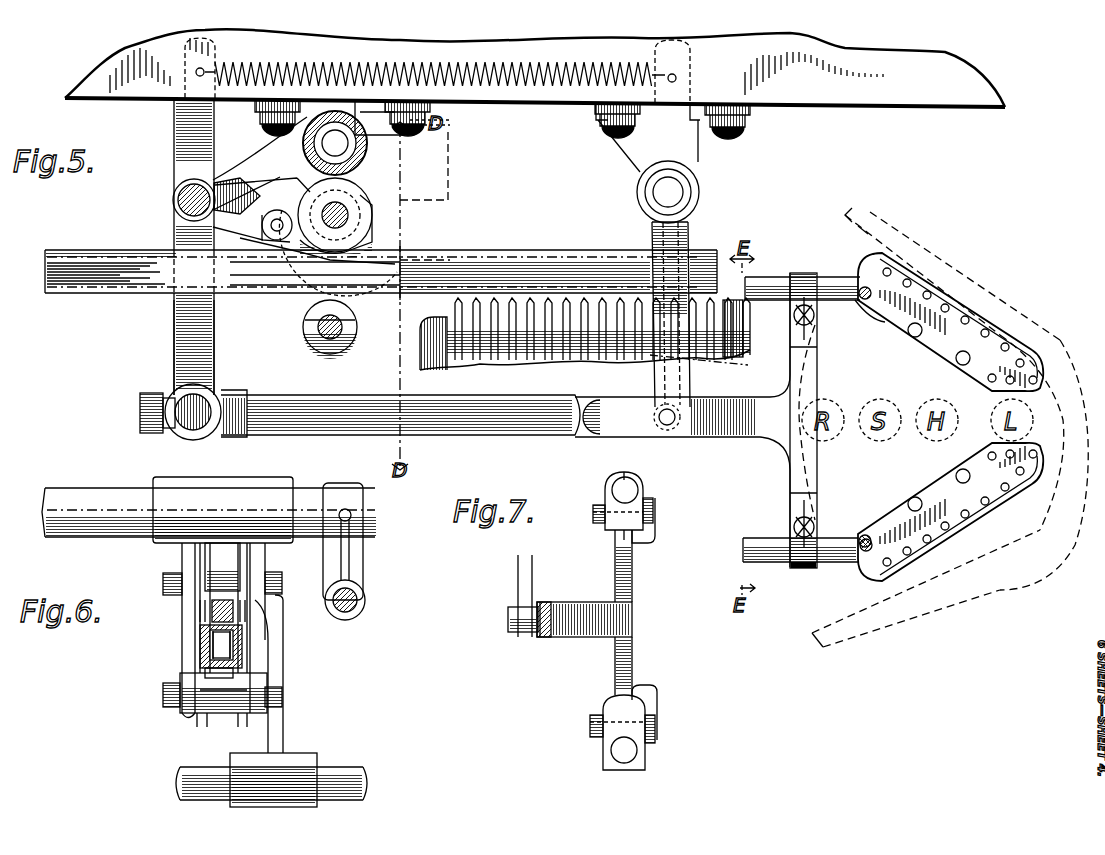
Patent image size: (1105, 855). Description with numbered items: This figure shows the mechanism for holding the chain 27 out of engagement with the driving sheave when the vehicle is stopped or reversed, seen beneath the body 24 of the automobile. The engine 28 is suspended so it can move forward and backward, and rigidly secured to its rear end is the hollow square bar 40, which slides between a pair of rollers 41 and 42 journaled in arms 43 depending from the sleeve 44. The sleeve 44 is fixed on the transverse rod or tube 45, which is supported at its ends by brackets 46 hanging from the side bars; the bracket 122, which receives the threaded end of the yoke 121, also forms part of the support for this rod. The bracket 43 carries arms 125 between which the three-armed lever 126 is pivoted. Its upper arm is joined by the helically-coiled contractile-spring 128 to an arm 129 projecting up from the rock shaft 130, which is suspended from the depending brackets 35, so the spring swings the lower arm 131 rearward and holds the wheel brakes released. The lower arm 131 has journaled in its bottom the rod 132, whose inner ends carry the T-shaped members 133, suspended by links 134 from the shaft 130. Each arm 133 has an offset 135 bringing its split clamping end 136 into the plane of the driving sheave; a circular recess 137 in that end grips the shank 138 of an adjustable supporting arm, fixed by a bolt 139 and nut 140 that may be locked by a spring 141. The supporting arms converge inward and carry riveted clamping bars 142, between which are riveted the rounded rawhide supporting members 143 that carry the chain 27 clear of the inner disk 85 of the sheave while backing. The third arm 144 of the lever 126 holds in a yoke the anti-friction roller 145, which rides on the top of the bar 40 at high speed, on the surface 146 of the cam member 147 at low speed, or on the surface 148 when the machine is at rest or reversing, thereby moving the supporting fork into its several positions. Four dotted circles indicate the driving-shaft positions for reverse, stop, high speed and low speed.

In FIG. 5, the body 24 is at (832, 60).
In FIG. 5, the endless flexible connection 27 is at (862, 228).
In FIG. 5, the engine 28 is at (572, 352).
In FIG. 5, the depending bracket 35 is at (632, 145).
In FIG. 5, the bar 40 is at (104, 275).
In FIG. 6, the bar 40 is at (238, 648).
In FIG. 5, the roller 41 is at (304, 332).
In FIG. 6, the roller 41 is at (215, 705).
In FIG. 5, the roller 42 is at (365, 212).
In FIG. 6, the roller 42 is at (208, 565).
In FIG. 5, the arm 43 is at (315, 255).
In FIG. 6, the arm 43 is at (252, 557).
In FIG. 5, the sleeve 44 is at (359, 192).
In FIG. 6, the sleeve 44 is at (258, 492).
In FIG. 5, the rod or tube 45 is at (368, 146).
In FIG. 6, the rod or tube 45 is at (72, 500).
In FIG. 5, the bracket 46 is at (415, 128).
In FIG. 5, the bearing disk 85 is at (1055, 545).
In FIG. 6, the yoke 121 is at (360, 570).
In FIG. 5, the bracket 122 is at (176, 118).
In FIG. 5, the arm 125 is at (246, 170).
In FIG. 5, the three-armed lever 126 is at (172, 206).
In FIG. 5, the helically-coiled contractile-spring 128 is at (498, 66).
In FIG. 5, the arm 129 is at (690, 85).
In FIG. 5, the rock shaft 130 is at (690, 186).
In FIG. 5, the lower arm 131 is at (176, 340).
In FIG. 6, the lower arm 131 is at (275, 730).
In FIG. 5, the rod 132 is at (452, 410).
In FIG. 6, the rod 132 is at (343, 775).
In FIG. 5, the T-shaped member 133 is at (730, 415).
In FIG. 7, the T-shaped member 133 is at (545, 605).
In FIG. 5, the link 134 is at (690, 230).
In FIG. 7, the link 134 is at (518, 580).
In FIG. 5, the offset 135 is at (700, 435).
In FIG. 7, the offset 135 is at (594, 625).
In FIG. 5, the clamping end 136 is at (825, 290).
In FIG. 7, the clamping end 136 is at (612, 484).
In FIG. 7, the circular recess 137 is at (638, 482).
In FIG. 5, the shank 138 is at (768, 278).
In FIG. 7, the shank 138 is at (630, 490).
In FIG. 7, the bolt 139 is at (605, 520).
In FIG. 7, the nut 140 is at (655, 520).
In FIG. 5, the spring 141 is at (808, 330).
In FIG. 7, the spring 141 is at (640, 545).
In FIG. 5, the clamping bar 142 is at (915, 300).
In FIG. 5, the supporting member 143 is at (905, 290).
In FIG. 5, the third arm 144 is at (305, 215).
In FIG. 5, the anti-friction roller 145 is at (262, 252).
In FIG. 5, the surface 146 is at (275, 242).
In FIG. 5, the cam member 147 is at (420, 242).
In FIG. 6, the cam member 147 is at (212, 610).
In FIG. 5, the surface 148 is at (420, 260).